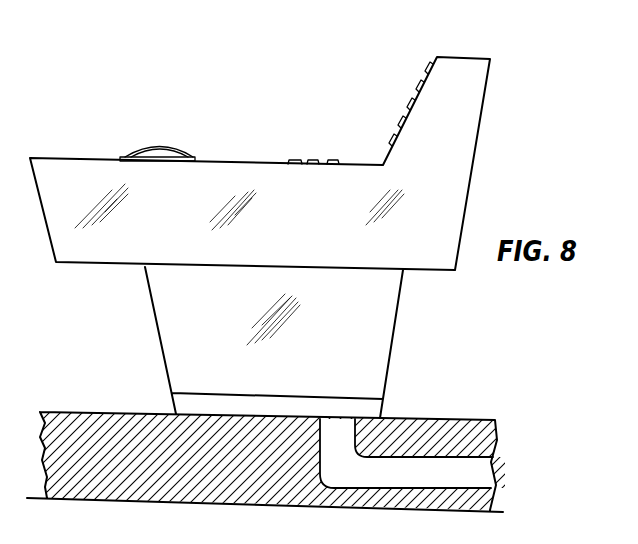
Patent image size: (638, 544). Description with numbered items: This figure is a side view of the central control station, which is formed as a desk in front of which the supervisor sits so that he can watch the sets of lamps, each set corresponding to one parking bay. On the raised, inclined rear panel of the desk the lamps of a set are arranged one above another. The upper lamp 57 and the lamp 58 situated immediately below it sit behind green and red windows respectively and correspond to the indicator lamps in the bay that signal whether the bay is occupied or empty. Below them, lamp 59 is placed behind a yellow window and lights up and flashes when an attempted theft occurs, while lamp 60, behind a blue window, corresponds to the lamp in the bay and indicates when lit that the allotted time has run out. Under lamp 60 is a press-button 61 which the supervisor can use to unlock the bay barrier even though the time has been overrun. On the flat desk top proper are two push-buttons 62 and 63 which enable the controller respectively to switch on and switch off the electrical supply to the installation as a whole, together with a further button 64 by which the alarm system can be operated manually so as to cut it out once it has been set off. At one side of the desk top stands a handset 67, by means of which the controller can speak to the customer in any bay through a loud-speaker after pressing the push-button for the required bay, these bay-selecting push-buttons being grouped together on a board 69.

The upper lamp 57 is at (428, 70).
The lamp 58 is at (419, 88).
The lamp 59 is at (410, 106).
The lamp 60 is at (401, 124).
The press-button 61 is at (392, 142).
The push-button 62 is at (333, 161).
The push-button 63 is at (297, 161).
The button 64 is at (310, 161).
The handset 67 is at (165, 151).
The board 69 is at (144, 153).